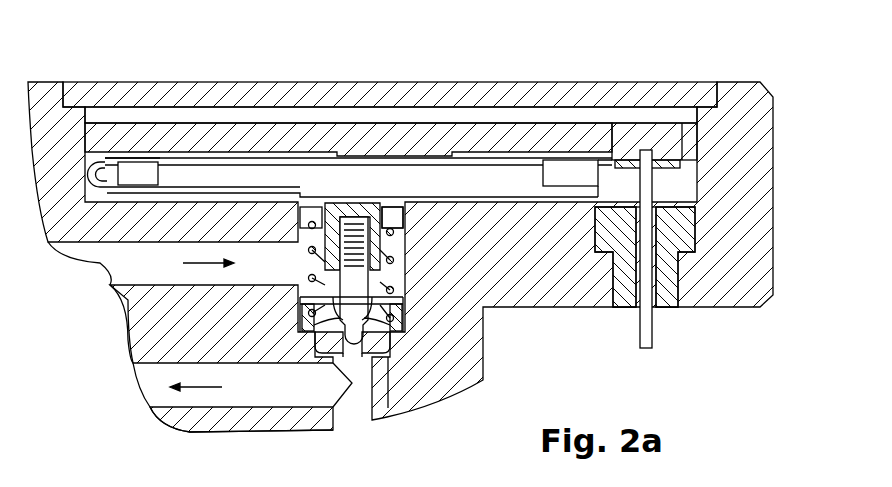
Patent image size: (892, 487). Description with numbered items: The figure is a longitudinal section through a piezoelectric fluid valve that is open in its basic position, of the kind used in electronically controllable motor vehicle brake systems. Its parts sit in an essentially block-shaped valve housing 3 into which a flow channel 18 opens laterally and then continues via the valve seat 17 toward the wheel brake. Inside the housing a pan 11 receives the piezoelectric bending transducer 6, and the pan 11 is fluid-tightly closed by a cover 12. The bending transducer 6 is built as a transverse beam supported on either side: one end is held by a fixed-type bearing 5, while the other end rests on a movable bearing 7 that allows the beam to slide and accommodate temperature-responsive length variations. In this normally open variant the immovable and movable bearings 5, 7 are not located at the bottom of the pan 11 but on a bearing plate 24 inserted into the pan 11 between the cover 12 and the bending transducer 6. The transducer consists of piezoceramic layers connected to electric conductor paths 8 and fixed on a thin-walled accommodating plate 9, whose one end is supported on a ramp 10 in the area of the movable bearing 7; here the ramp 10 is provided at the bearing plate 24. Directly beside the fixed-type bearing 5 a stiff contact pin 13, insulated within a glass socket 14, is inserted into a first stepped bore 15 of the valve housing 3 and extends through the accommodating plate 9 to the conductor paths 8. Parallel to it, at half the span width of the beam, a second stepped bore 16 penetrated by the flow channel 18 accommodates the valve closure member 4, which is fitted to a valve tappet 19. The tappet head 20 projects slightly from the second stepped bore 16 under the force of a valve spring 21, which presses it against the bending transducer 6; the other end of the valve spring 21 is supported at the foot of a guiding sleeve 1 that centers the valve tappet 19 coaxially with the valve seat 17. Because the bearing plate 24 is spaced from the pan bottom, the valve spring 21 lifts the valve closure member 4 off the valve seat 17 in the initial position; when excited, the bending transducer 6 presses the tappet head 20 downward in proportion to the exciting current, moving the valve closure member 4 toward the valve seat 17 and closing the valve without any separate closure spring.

The guiding sleeve 1 is at (367, 308).
The valve housing 3 is at (742, 165).
The valve closure member 4 is at (353, 345).
The fixed-type bearing 5 is at (590, 165).
The piezoelectric bending transducer 6 is at (524, 178).
The movable bearing 7 is at (127, 160).
The electric conductor paths 8 is at (677, 188).
The accommodating plate 9 is at (146, 172).
The ramp 10 is at (126, 158).
The pan 11 is at (676, 122).
The cover 12 is at (383, 97).
The contact pin 13 is at (655, 336).
The glass socket 14 is at (627, 278).
The first stepped bore 15 is at (688, 208).
The second stepped bore 16 is at (398, 272).
The valve seat 17 is at (380, 355).
The flow channel 18 is at (135, 377).
The valve tappet 19 is at (345, 276).
The tappet head 20 is at (392, 215).
The valve spring 21 is at (330, 279).
The bearing plate 24 is at (284, 140).